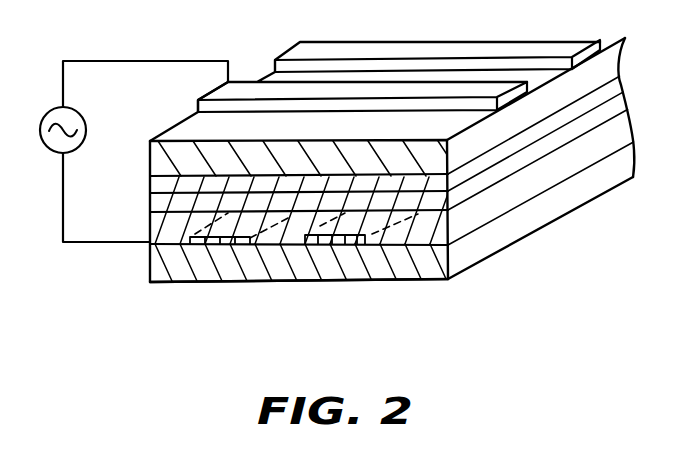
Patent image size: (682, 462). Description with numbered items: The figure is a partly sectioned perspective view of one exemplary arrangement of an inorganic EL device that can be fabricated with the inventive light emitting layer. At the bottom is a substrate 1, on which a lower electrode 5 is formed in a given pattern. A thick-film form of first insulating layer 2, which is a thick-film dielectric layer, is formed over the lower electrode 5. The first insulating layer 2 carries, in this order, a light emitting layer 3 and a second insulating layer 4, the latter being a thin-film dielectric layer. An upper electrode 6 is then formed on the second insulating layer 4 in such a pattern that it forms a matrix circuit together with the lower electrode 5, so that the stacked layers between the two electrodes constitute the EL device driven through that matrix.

The substrate 1 is at (449, 281).
The first insulating layer 2 is at (455, 243).
The light emitting layer 3 is at (149, 206).
The second insulating layer 4 is at (149, 160).
The lower electrode 5 is at (205, 246).
The upper electrode 6 is at (198, 100).